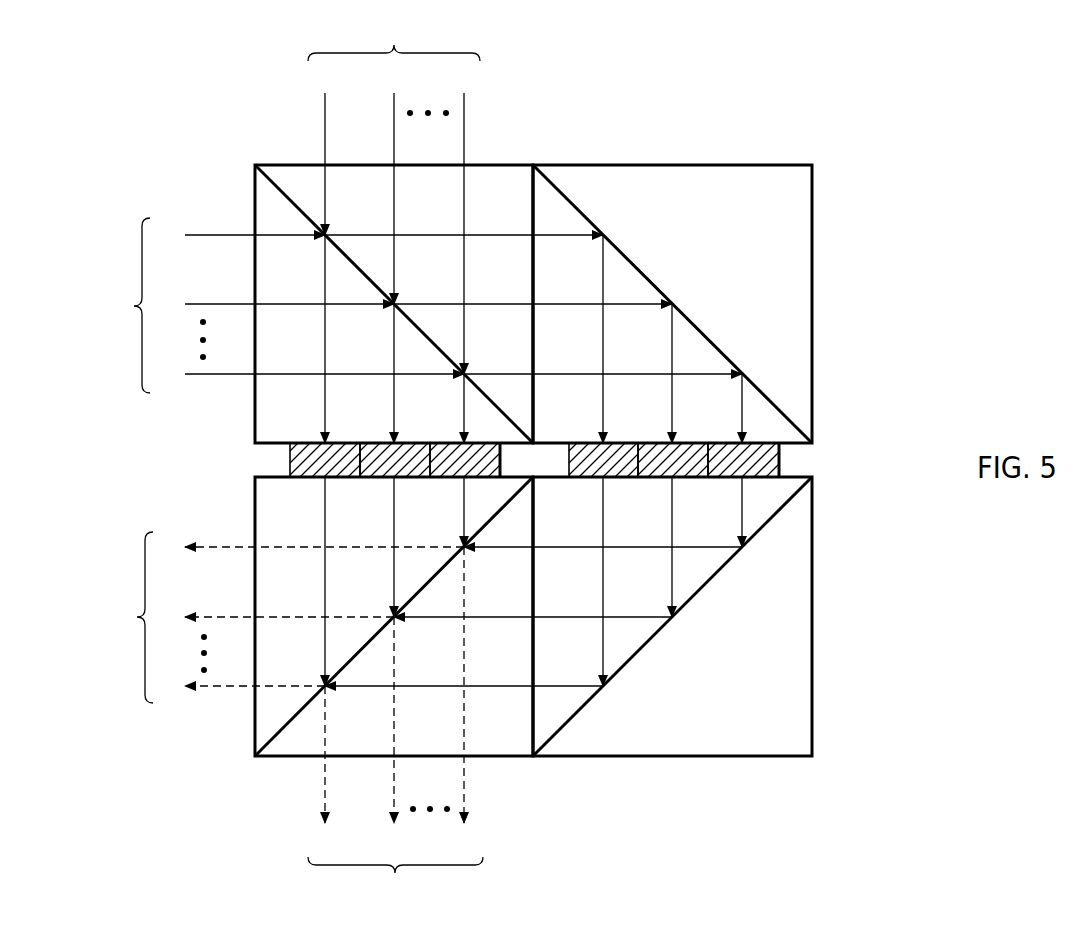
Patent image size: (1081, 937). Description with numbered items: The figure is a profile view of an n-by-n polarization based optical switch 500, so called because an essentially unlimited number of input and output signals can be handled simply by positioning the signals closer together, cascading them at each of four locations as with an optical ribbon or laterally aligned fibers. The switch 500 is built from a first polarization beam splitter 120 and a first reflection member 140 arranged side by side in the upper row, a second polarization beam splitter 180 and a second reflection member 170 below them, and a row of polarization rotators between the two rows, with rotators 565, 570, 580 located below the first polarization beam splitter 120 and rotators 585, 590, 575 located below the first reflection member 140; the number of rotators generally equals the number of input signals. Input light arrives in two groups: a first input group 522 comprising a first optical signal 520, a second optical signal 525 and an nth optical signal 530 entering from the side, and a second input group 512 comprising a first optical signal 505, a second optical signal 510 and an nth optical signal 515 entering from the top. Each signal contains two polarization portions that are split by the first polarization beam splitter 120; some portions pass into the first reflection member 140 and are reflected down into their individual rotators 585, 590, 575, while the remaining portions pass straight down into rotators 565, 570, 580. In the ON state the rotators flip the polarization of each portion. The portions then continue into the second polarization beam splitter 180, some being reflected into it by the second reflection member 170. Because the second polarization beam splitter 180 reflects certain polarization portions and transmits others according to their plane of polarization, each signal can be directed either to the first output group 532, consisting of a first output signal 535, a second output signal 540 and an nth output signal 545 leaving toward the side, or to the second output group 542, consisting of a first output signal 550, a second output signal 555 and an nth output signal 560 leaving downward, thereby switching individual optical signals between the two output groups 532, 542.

The n×n polarization based optical switch 500 is at (900, 213).
The first polarization beam splitter 120 is at (317, 164).
The first reflection member 140 is at (740, 164).
The second polarization beam splitter 180 is at (318, 757).
The second reflection member 170 is at (740, 757).
The first optical signal of second input group 505 is at (325, 254).
The second optical signal of second input group 510 is at (394, 254).
The nth optical signal of second input group 515 is at (464, 254).
The second input group 512 is at (394, 38).
The first optical signal of first input group 520 is at (377, 235).
The second optical signal of first input group 525 is at (411, 304).
The nth optical signal of first input group 530 is at (446, 374).
The first input group 522 is at (124, 305).
The first output signal of first output group 535 is at (446, 518).
The second output signal of first output group 540 is at (411, 553).
The nth output signal of first output group 545 is at (377, 588).
The first output group 532 is at (125, 617).
The first output signal of second output group 550 is at (327, 668).
The second output signal of second output group 555 is at (395, 668).
The nth output signal of second output group 560 is at (465, 668).
The second output group 542 is at (395, 884).
The polarization rotator 565 is at (325, 460).
The polarization rotator 570 is at (395, 460).
The polarization rotator 580 is at (465, 460).
The polarization rotator 585 is at (603, 356).
The polarization rotator 590 is at (673, 390).
The buffer 575 is at (743, 425).